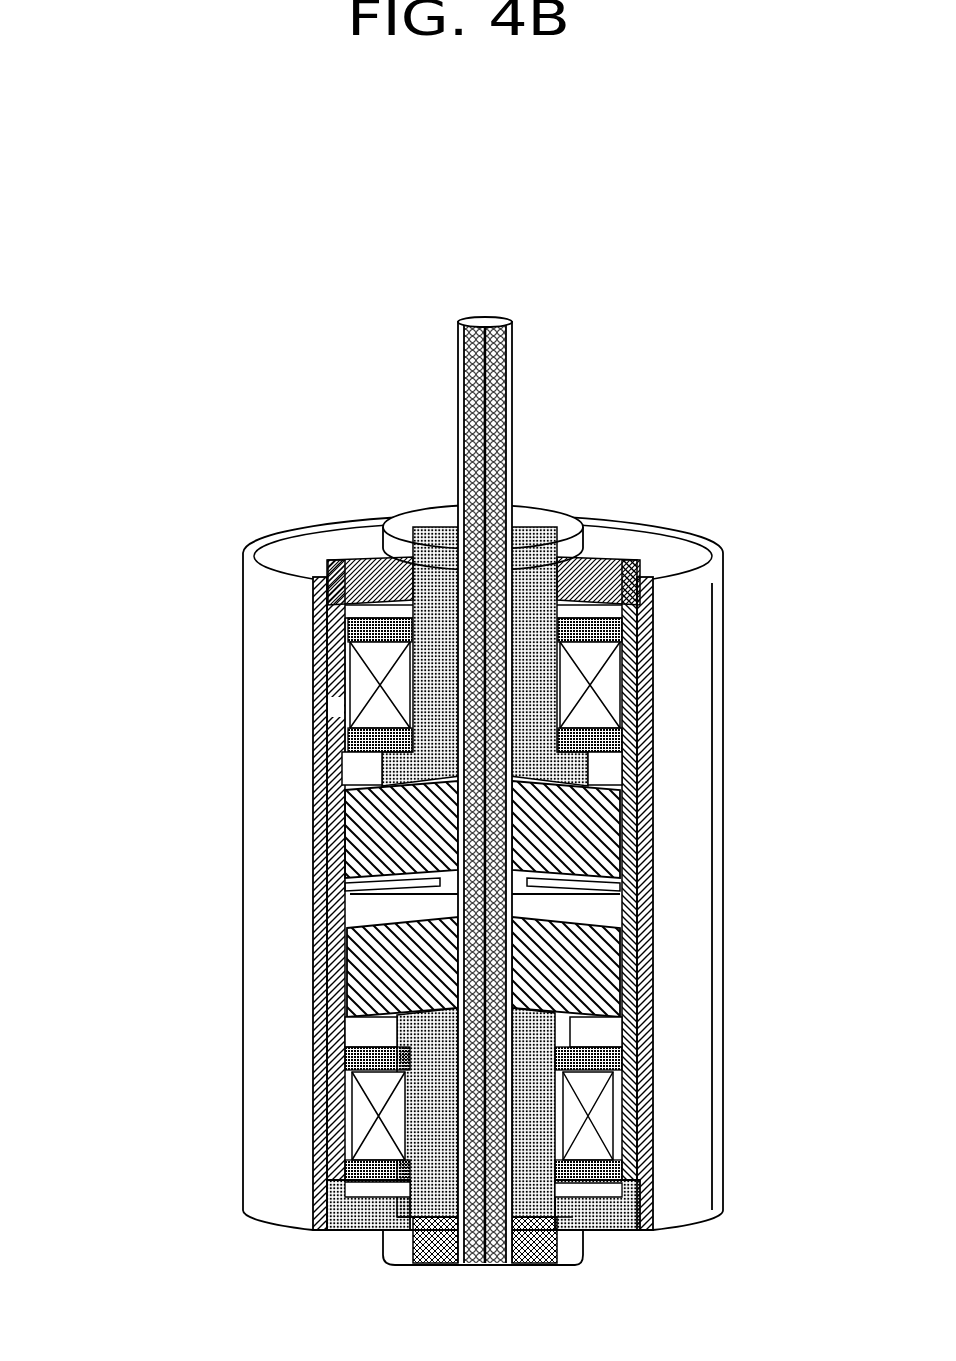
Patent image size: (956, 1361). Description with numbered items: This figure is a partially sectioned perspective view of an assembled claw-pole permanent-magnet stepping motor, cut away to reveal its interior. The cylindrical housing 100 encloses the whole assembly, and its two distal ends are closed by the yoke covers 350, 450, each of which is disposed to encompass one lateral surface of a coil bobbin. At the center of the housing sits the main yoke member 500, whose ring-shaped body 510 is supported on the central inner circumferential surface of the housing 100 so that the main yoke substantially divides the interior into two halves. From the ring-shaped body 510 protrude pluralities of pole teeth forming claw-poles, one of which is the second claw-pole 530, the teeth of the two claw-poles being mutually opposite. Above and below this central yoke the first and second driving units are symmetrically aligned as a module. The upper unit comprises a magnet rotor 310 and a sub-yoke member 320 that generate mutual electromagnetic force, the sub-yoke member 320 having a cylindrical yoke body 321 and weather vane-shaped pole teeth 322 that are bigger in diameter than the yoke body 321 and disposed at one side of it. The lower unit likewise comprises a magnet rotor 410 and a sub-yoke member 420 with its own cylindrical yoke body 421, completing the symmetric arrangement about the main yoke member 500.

The housing 100 is at (243, 547).
The yoke cover 350 is at (285, 540).
The sub-yoke member 320 is at (380, 700).
The yoke body 321 is at (427, 658).
The pole teeth 322 is at (337, 760).
The main yoke member 500 is at (296, 913).
The ring-shaped body 510 is at (653, 787).
The second claw-pole 530 is at (320, 960).
The magnet rotor 310 is at (580, 855).
The magnet rotor 410 is at (580, 970).
The sub-yoke member 420 is at (345, 1045).
The yoke body 421 is at (430, 1118).
The yoke cover 450 is at (353, 1233).